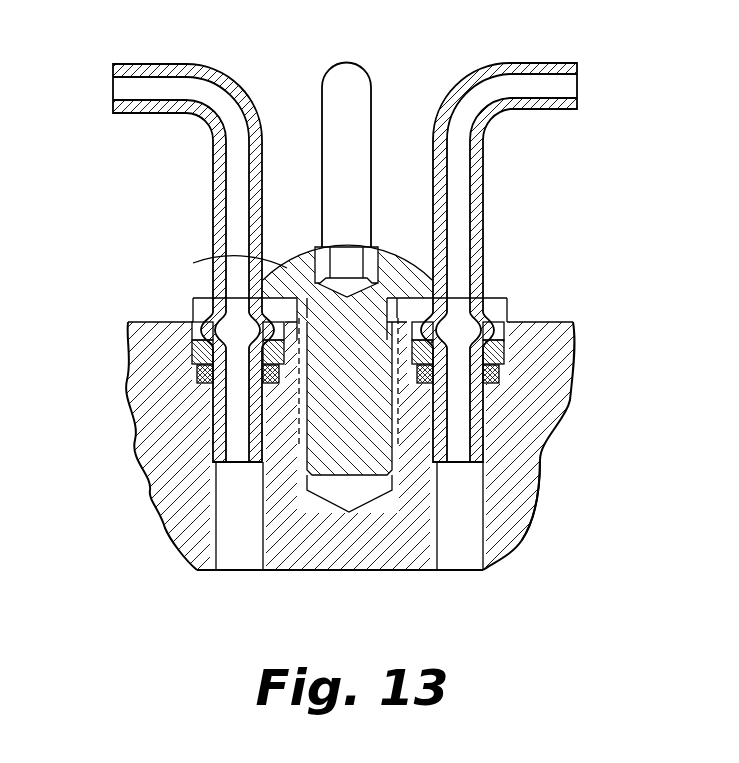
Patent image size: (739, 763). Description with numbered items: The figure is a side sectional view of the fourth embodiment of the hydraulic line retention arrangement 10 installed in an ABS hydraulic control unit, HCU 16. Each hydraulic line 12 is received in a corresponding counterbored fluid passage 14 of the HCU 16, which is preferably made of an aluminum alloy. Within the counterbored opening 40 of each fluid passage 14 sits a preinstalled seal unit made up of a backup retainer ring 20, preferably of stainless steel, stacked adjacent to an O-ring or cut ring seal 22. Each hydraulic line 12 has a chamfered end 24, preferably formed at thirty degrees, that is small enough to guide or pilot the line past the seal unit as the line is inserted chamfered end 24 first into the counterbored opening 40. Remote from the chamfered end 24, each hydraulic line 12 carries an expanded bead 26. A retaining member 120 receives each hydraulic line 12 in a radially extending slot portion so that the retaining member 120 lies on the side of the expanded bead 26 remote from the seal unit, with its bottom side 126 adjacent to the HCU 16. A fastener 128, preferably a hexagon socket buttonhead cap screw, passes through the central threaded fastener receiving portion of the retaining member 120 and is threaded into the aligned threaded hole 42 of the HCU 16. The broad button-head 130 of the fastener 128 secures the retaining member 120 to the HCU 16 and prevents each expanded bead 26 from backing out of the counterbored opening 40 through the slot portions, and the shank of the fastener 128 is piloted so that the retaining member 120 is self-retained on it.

The tube coupling assembly 10 is at (150, 200).
The hydraulic line 12 is at (133, 63).
The fluid passage 14 is at (487, 569).
The hydraulic control unit 16 is at (515, 506).
The backup retainer ring 20 is at (505, 355).
The cut ring seal 22 is at (500, 378).
The chamfered end 24 is at (458, 463).
The expanded bead 26 is at (492, 320).
The counterbored opening 40 is at (575, 318).
The threaded hole 42 is at (343, 484).
The retaining member 120 is at (492, 296).
The bottom side 126 is at (413, 252).
The fastener 128 is at (210, 263).
The button-head 130 is at (342, 249).